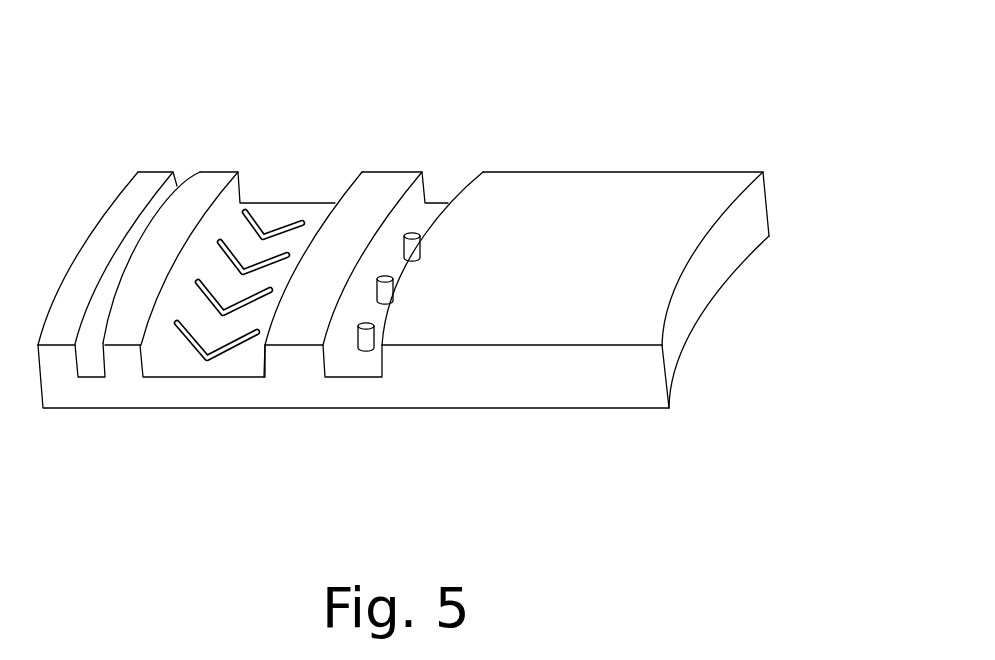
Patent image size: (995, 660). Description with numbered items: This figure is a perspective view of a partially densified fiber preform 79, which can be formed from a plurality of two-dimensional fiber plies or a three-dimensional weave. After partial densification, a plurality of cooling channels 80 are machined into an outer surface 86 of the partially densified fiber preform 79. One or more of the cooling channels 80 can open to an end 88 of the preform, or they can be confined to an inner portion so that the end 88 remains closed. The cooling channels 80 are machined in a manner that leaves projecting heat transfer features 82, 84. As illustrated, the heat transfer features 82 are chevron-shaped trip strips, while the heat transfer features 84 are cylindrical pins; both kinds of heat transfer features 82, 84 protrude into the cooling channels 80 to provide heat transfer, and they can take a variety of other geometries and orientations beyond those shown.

The partially densified fiber preform 79 is at (419, 261).
The cooling channels 80 is at (343, 367).
The heat transfer features (chevron-shaped trip strips) 82 is at (263, 213).
The heat transfer features (cylindrical pins) 84 is at (414, 244).
The outer surface 86 is at (648, 272).
The end 88 is at (510, 377).